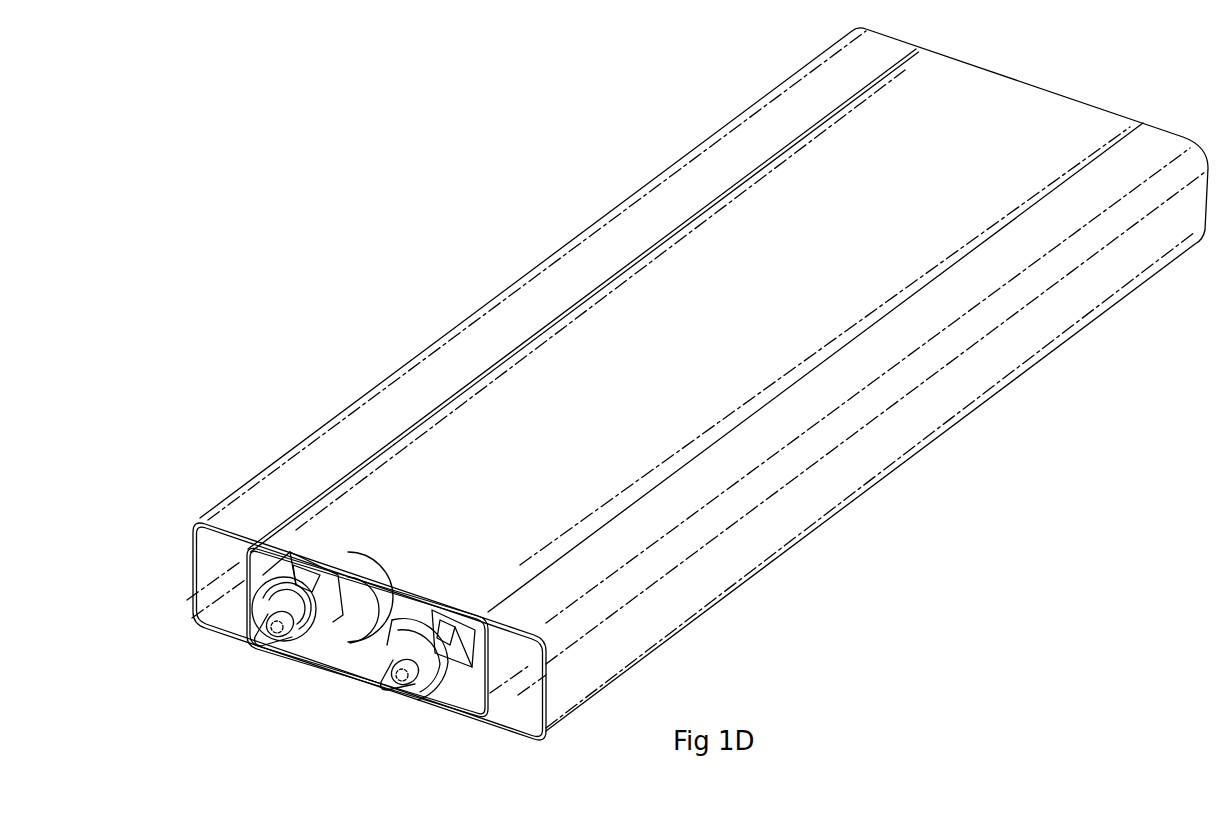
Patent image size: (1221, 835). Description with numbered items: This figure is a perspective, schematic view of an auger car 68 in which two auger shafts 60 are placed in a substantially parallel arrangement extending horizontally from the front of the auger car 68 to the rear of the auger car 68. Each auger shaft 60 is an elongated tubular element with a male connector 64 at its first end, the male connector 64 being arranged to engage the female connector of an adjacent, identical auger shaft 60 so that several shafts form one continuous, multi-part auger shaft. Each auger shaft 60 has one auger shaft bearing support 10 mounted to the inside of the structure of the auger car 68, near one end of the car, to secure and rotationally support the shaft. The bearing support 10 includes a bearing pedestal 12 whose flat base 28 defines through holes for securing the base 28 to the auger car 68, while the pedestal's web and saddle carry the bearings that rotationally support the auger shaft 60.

The auger shaft bearing support 10 is at (310, 580).
The bearing pedestal 12 is at (304, 578).
The flat base 28 is at (248, 540).
The auger shaft 60 is at (330, 572).
The male connector 64 is at (258, 641).
The auger car 68 is at (338, 223).